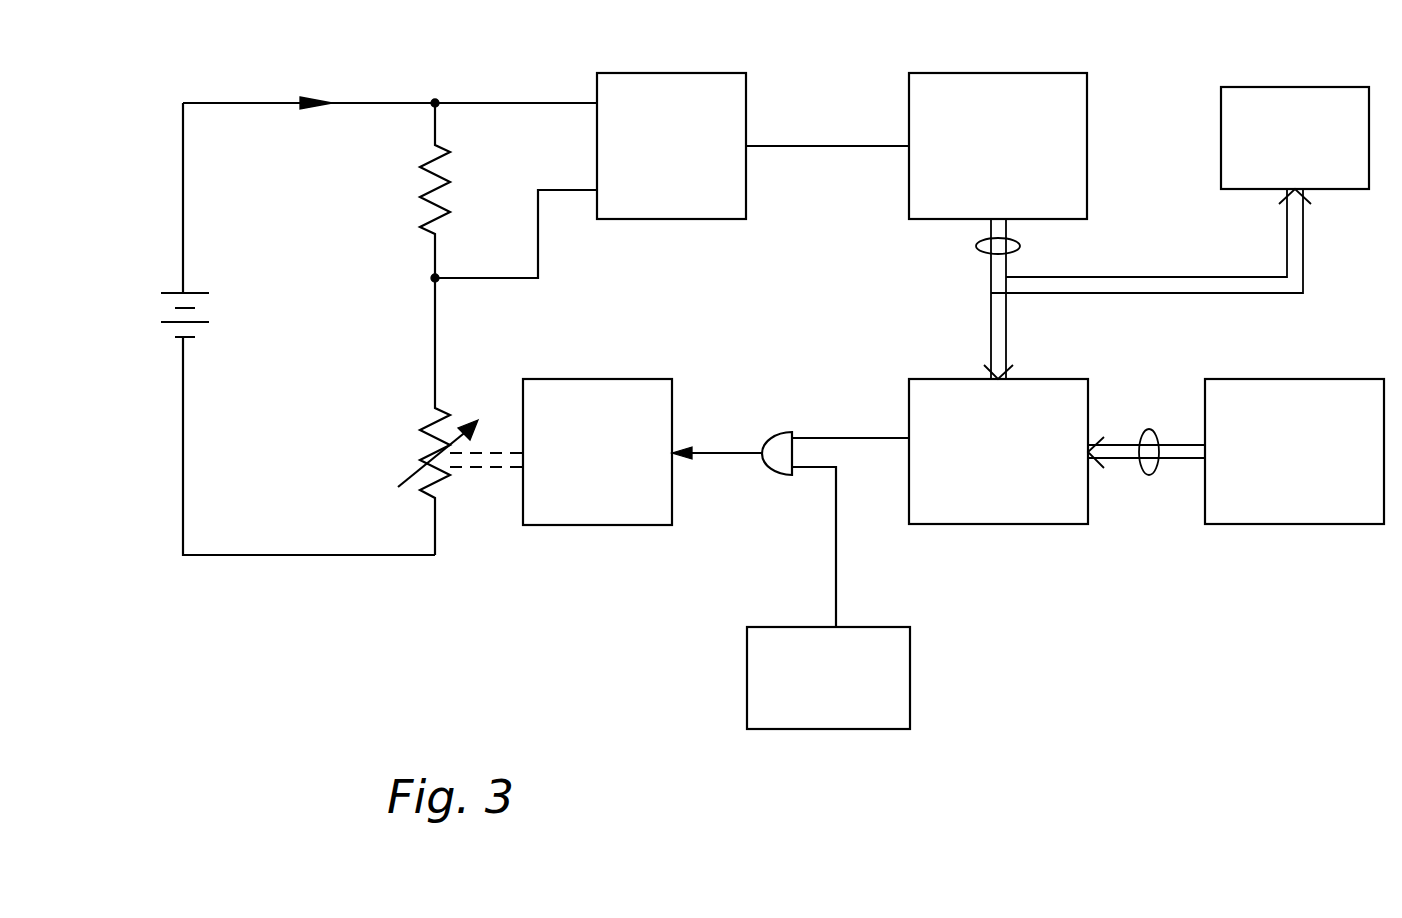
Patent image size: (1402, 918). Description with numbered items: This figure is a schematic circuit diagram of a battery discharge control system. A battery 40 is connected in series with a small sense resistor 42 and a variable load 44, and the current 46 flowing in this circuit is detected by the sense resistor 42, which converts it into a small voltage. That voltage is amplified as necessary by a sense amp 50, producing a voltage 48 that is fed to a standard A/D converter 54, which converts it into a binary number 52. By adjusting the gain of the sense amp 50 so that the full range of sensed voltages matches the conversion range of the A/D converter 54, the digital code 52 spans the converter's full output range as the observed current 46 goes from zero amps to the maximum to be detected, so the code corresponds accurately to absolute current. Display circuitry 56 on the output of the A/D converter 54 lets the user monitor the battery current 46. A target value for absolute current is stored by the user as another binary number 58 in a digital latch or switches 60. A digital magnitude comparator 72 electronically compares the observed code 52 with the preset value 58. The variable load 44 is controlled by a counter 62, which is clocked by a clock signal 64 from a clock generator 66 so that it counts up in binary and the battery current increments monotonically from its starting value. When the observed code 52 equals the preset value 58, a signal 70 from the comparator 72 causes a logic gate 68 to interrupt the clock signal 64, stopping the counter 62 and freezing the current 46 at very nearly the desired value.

The battery 40 is at (298, 329).
The sense resistor 42 is at (443, 185).
The variable load 44 is at (451, 416).
The current 46 is at (303, 100).
The voltage 48 is at (826, 145).
The sense amp 50 is at (665, 92).
The binary number 52 is at (976, 250).
The A/D converter 54 is at (1033, 103).
The display circuitry 56 is at (1325, 120).
The binary number 58 is at (1155, 475).
The switches 60 is at (1310, 508).
The counter 62 is at (605, 510).
The clock signal 64 is at (725, 455).
The clock generator 66 is at (892, 688).
The logic gate 68 is at (775, 443).
The signal 70 is at (856, 436).
The digital magnitude comparator 72 is at (1045, 508).